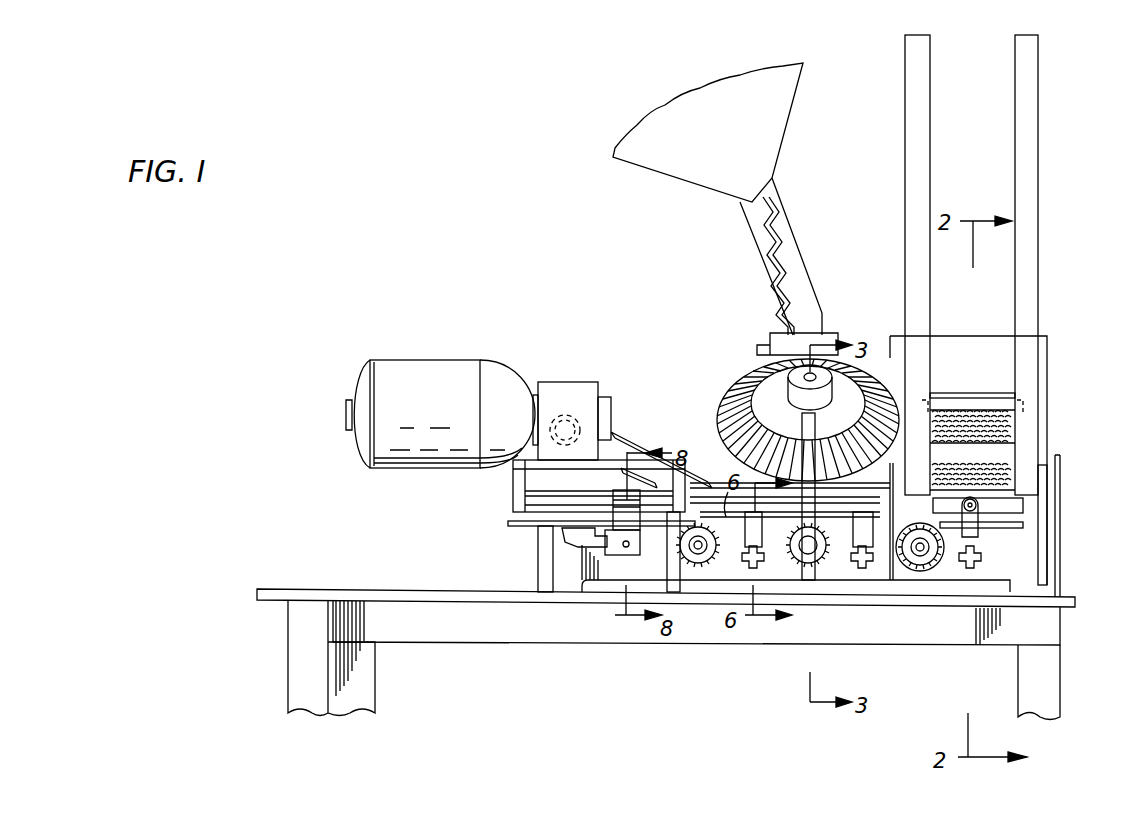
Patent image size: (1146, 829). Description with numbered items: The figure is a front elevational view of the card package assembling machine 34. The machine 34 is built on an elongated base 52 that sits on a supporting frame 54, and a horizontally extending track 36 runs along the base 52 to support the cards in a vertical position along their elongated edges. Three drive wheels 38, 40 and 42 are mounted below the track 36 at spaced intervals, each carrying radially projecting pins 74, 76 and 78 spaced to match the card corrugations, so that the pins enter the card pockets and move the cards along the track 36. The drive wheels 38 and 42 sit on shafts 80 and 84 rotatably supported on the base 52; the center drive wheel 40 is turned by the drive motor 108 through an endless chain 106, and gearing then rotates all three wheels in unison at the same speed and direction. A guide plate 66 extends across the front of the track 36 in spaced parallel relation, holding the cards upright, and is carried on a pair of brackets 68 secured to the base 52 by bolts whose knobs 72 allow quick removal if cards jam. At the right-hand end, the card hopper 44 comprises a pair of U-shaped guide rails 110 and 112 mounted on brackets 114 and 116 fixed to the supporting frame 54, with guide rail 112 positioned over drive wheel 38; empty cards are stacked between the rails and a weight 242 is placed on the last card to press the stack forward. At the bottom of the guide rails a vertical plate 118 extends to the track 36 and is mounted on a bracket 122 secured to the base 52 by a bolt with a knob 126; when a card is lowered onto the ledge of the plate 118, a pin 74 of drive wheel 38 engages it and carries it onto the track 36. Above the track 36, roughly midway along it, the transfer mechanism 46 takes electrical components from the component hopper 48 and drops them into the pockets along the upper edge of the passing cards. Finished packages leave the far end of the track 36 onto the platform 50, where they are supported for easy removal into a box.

The machine 34 is at (1065, 416).
The track 36 is at (722, 474).
The drive wheel 38 is at (923, 563).
The drive wheel 40 is at (818, 562).
The drive wheel 42 is at (704, 553).
The hopper 44 is at (1043, 273).
The transfer mechanism 46 is at (740, 392).
The hopper 48 is at (777, 187).
The platform 50 is at (530, 526).
The base 52 is at (1028, 555).
The supporting frame 54 is at (1055, 628).
The guide plate 66 is at (830, 503).
The brackets 68 is at (768, 548).
The knobs 72 is at (758, 572).
The pins 74 is at (933, 525).
The pins 76 is at (792, 562).
The pins 78 is at (685, 556).
The shaft 80 is at (917, 549).
The shaft 84 is at (696, 548).
The endless chain 106 is at (632, 430).
The drive motor 108 is at (455, 367).
The guide rail 110 is at (1028, 152).
The guide rail 112 is at (913, 98).
The bracket 114 is at (1042, 482).
The bracket 116 is at (897, 584).
The vertical plate 118 is at (1020, 505).
The bracket 122 is at (976, 541).
The knob 126 is at (985, 560).
The weight 242 is at (985, 395).